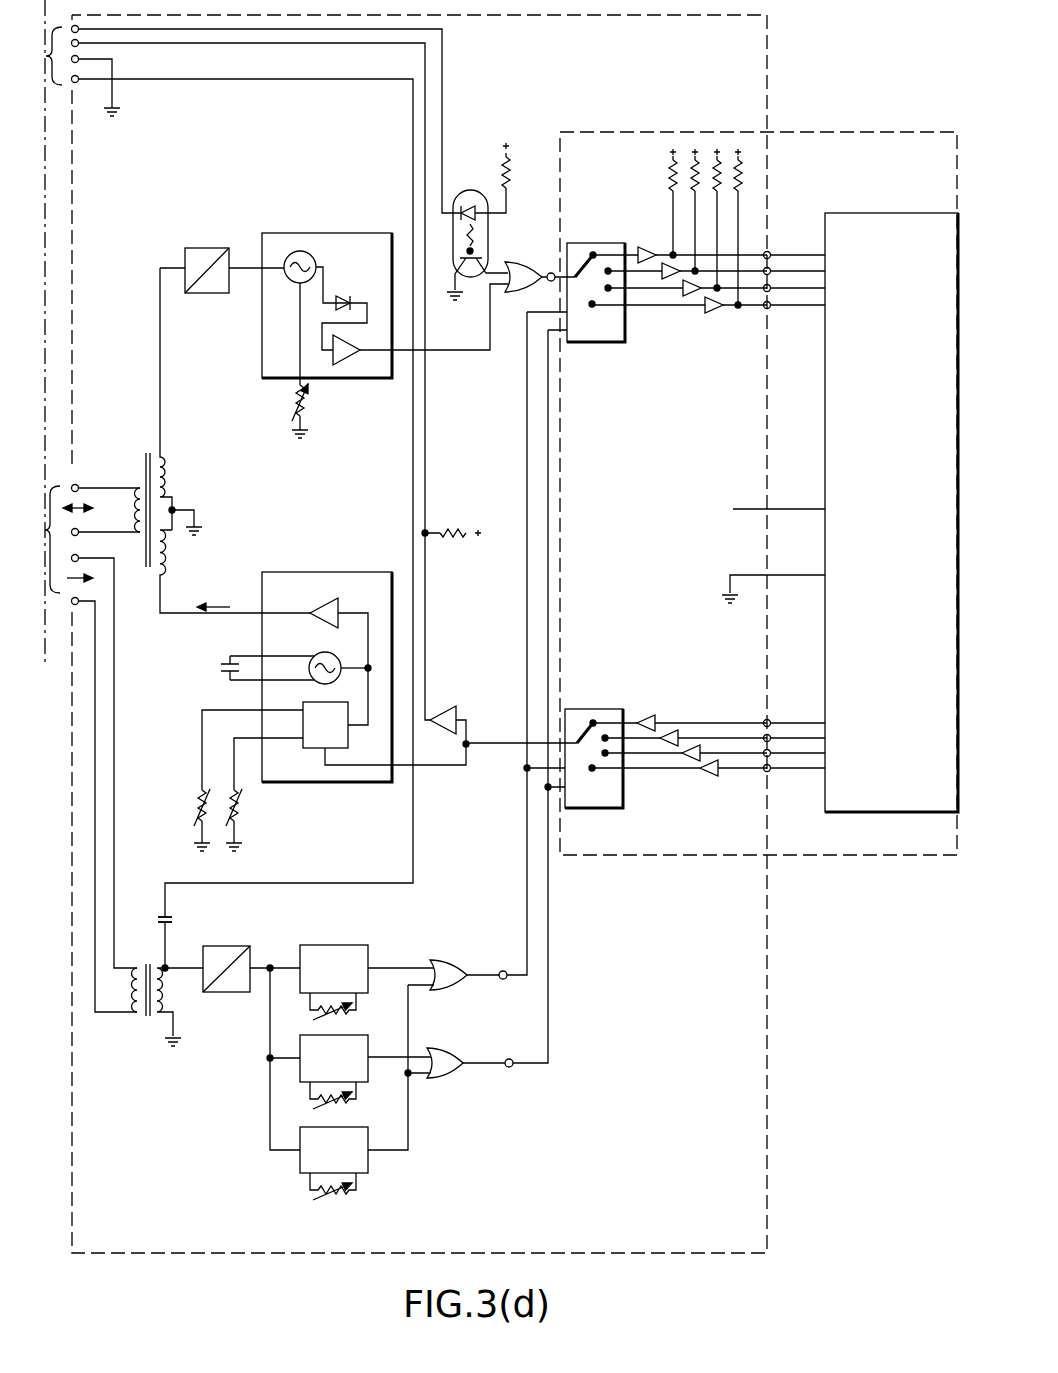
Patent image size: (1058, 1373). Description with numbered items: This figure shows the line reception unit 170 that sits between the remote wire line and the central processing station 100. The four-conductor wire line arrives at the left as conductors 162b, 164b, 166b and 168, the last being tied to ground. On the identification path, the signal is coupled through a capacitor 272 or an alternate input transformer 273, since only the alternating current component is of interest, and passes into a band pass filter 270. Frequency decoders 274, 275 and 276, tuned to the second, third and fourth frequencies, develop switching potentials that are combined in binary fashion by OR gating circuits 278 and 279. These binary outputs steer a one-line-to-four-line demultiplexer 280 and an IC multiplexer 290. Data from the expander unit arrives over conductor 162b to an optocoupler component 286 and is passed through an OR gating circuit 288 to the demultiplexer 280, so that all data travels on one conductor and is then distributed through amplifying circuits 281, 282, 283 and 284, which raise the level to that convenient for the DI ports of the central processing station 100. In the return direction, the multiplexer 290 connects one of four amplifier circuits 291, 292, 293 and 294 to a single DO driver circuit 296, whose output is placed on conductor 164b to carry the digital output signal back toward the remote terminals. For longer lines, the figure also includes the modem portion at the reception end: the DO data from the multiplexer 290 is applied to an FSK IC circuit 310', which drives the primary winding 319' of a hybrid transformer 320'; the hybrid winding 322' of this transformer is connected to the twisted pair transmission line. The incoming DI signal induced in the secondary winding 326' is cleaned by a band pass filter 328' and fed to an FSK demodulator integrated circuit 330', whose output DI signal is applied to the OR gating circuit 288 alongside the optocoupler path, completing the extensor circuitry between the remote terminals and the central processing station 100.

The central processing station 100 is at (870, 213).
The conductor 162b is at (164, 29).
The conductor 164b is at (166, 45).
The conductor 166b is at (166, 82).
The conductor 168 is at (116, 57).
The line reception unit 170 is at (770, 100).
The band pass filter 270 is at (248, 950).
The capacitor 272 is at (170, 918).
The input transformer 273 is at (146, 968).
The frequency decoder 274 is at (369, 954).
The frequency decoder 275 is at (368, 1075).
The frequency decoder 276 is at (368, 1166).
The OR gating circuit 278 is at (456, 959).
The OR gating circuit 279 is at (456, 1047).
The one-line-to-four-line demultiplexer 280 is at (580, 245).
The amplifying circuit 281 is at (638, 247).
The amplifying circuit 282 is at (662, 263).
The amplifying circuit 283 is at (681, 297).
The amplifying circuit 284 is at (710, 313).
The optocoupler component 286 is at (488, 246).
The OR gating circuit 288 is at (516, 268).
The IC multiplexer 290 is at (576, 712).
The amplifier circuit 291 is at (645, 715).
The amplifier circuit 292 is at (667, 730).
The amplifier circuit 293 is at (685, 761).
The amplifier circuit 294 is at (713, 776).
The DO driver circuit 296 is at (440, 713).
The FSK IC circuit 310' is at (331, 698).
The primary winding 319' is at (235, 571).
The hybrid transformer 320' is at (206, 440).
The hybrid winding 322' is at (121, 510).
The secondary winding 326' is at (182, 399).
The band pass filter 328' is at (222, 256).
The FSK demodulator integrated circuit 330' is at (385, 320).